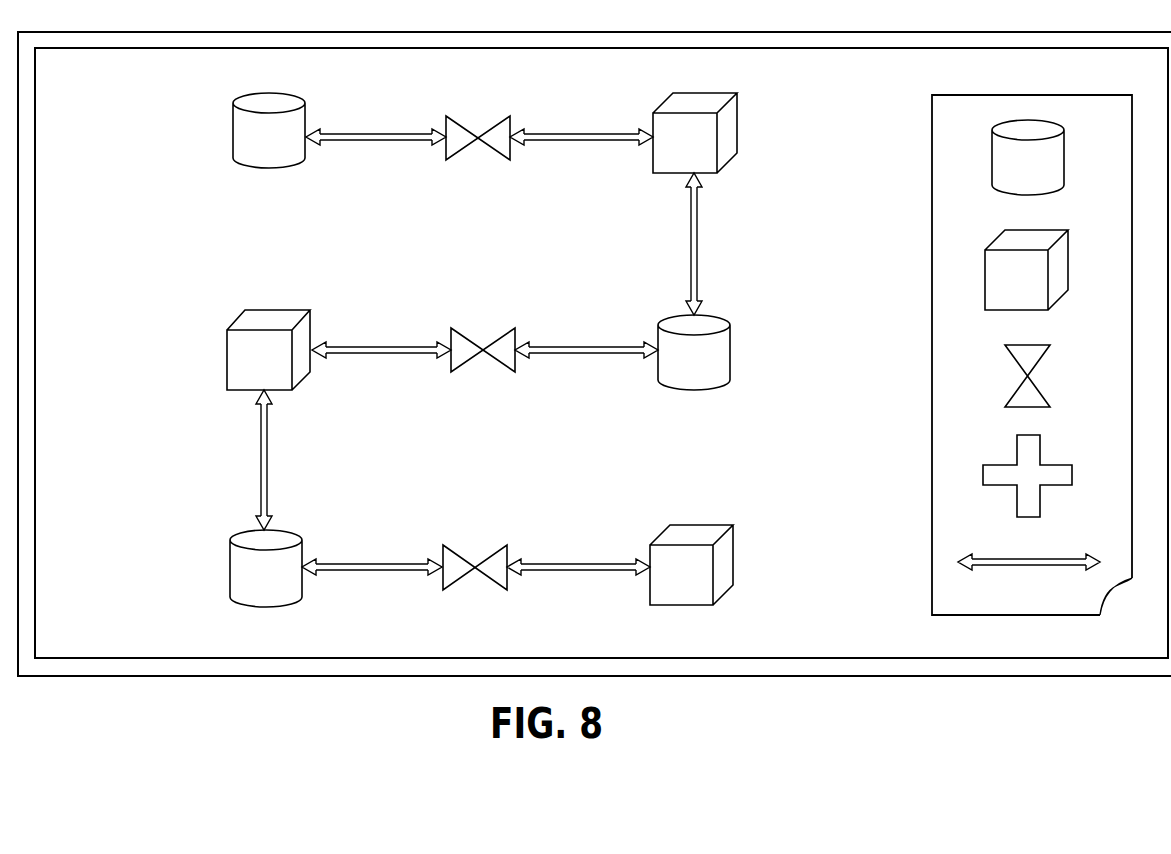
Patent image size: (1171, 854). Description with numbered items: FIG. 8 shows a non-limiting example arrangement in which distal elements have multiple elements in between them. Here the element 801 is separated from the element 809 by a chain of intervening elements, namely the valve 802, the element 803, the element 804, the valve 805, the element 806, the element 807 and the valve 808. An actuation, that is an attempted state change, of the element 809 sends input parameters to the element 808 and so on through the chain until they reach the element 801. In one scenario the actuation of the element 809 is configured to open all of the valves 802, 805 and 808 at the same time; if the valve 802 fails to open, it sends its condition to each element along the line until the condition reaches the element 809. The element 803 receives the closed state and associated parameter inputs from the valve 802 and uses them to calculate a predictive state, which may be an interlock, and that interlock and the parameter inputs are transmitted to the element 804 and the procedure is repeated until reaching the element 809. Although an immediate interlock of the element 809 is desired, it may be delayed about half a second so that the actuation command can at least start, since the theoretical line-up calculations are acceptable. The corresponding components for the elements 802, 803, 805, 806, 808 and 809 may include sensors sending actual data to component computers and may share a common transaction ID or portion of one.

The element 801 is at (233, 140).
The valve element 802 is at (477, 140).
The element 803 is at (740, 138).
The element 804 is at (733, 352).
The valve element 805 is at (483, 350).
The element 806 is at (227, 352).
The element 807 is at (227, 567).
The valve element 808 is at (477, 565).
The element 809 is at (735, 562).